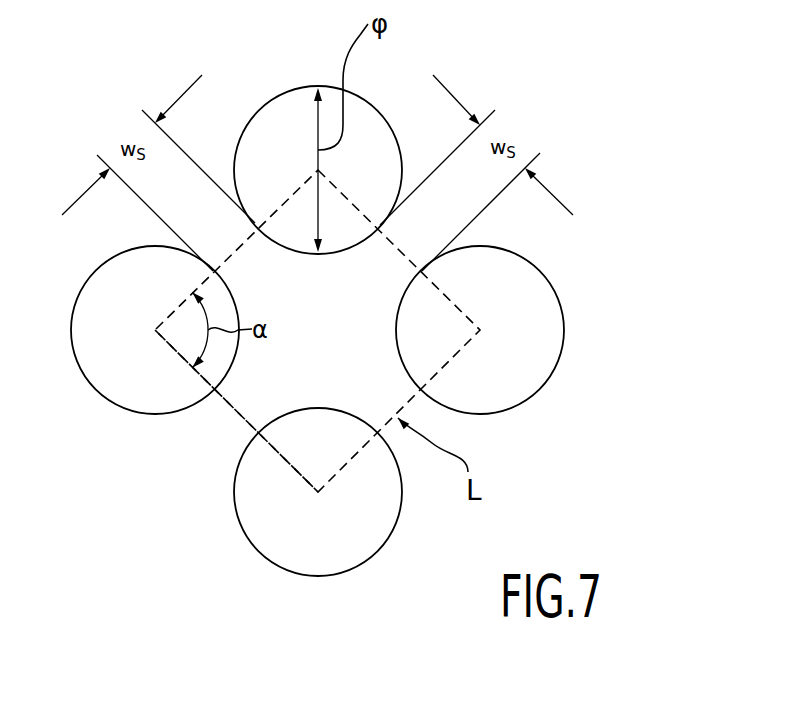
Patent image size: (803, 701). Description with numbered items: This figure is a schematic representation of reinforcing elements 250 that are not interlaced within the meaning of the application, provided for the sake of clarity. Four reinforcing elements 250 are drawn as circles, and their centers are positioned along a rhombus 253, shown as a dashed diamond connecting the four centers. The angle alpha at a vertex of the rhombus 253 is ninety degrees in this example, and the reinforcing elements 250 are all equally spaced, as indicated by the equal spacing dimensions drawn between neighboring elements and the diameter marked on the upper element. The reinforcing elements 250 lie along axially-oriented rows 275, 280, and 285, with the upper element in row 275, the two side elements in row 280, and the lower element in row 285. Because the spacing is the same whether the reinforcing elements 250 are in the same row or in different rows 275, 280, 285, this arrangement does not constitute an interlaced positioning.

The reinforcing element 250 is at (542, 291).
The rhombus 253 is at (237, 414).
The axially-oriented row 275 is at (584, 170).
The axially-oriented row 280 is at (379, 322).
The axially-oriented row 285 is at (584, 495).